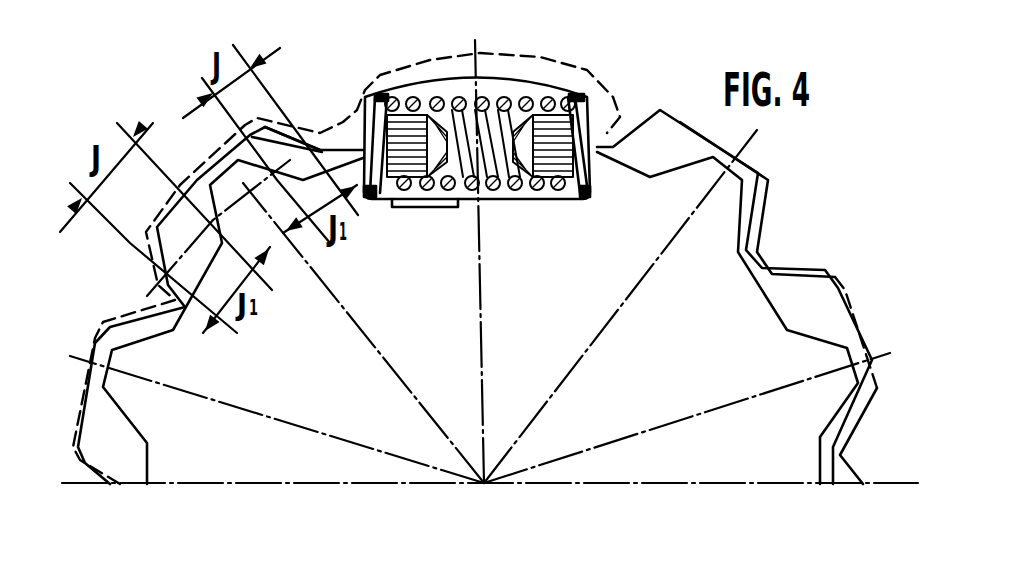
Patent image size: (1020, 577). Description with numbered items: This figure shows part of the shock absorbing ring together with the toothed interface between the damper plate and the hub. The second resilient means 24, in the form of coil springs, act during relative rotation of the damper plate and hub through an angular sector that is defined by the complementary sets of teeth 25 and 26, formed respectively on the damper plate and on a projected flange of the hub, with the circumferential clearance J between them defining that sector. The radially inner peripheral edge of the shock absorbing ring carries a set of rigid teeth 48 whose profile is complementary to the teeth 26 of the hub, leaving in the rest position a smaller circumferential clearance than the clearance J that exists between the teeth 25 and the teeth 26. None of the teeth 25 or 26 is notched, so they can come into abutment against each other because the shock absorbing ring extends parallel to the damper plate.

The second resilient means 24 is at (437, 102).
The set of teeth 25 is at (320, 111).
The set of teeth 26 is at (273, 224).
The set of teeth 48 is at (347, 132).